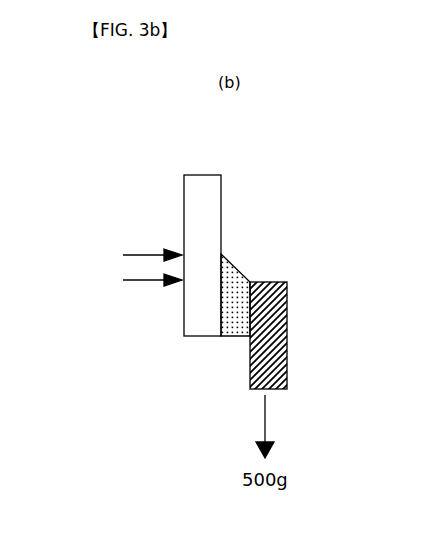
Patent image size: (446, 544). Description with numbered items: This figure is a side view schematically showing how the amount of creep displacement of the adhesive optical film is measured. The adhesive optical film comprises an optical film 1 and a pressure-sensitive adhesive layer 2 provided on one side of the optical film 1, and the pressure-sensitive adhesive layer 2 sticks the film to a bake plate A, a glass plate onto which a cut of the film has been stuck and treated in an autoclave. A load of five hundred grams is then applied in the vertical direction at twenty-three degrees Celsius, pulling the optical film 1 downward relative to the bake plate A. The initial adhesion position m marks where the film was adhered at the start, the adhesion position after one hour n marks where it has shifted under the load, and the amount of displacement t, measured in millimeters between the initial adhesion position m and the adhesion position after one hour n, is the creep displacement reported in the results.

The bake plate A is at (205, 193).
The optical film 1 is at (287, 323).
The pressure-sensitive adhesive layer 2 is at (232, 336).
The initial adhesion position m is at (138, 250).
The adhesion position after one hour n is at (142, 287).
The amount of displacement t is at (80, 272).